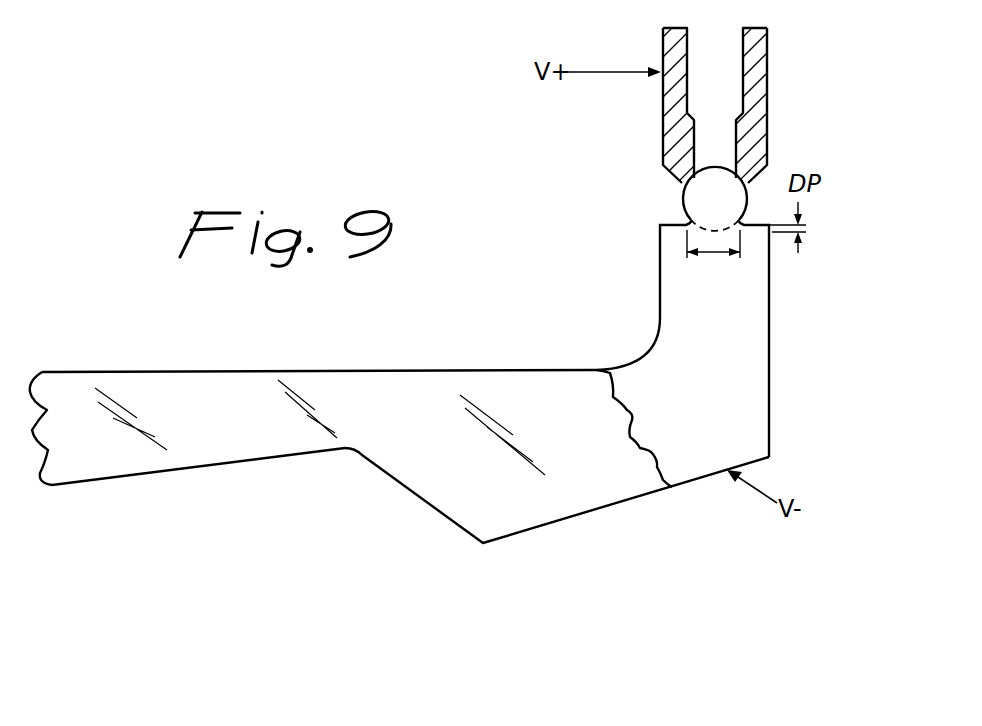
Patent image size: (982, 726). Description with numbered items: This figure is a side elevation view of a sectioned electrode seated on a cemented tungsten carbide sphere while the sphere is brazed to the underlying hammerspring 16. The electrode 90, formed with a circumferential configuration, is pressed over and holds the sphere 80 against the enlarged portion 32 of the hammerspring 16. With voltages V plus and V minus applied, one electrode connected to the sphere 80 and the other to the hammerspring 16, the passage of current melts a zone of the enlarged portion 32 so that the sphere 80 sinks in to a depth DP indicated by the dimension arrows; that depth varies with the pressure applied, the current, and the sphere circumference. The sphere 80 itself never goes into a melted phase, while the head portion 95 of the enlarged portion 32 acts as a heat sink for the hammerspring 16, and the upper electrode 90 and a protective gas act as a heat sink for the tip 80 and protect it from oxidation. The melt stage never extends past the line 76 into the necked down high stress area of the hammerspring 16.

The hammerspring 16 is at (212, 463).
The enlarged portion 32 is at (533, 510).
The line 76 is at (633, 419).
The sphere 80 is at (683, 202).
The electrode 90 is at (660, 93).
The head portion 95 is at (770, 345).